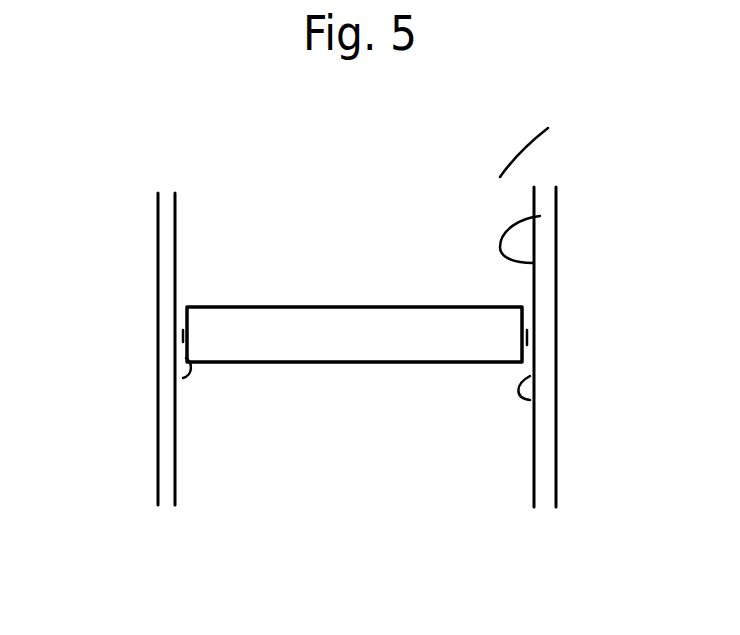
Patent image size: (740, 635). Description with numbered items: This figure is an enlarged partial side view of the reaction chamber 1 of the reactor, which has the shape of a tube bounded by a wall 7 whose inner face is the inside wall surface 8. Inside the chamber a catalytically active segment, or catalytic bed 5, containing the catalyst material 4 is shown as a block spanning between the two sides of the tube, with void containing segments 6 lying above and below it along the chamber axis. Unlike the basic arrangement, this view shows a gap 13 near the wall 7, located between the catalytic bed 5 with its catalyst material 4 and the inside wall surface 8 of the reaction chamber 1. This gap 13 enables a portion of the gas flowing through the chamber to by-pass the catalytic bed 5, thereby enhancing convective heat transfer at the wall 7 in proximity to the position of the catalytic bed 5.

The reaction chamber 1 is at (585, 134).
The catalyst material 4 is at (354, 398).
The catalytically active segment 5 is at (440, 348).
The void containing segment 6 is at (207, 242).
The wall 7 is at (549, 194).
The inside wall surface 8 is at (183, 378).
The gap 13 is at (178, 334).